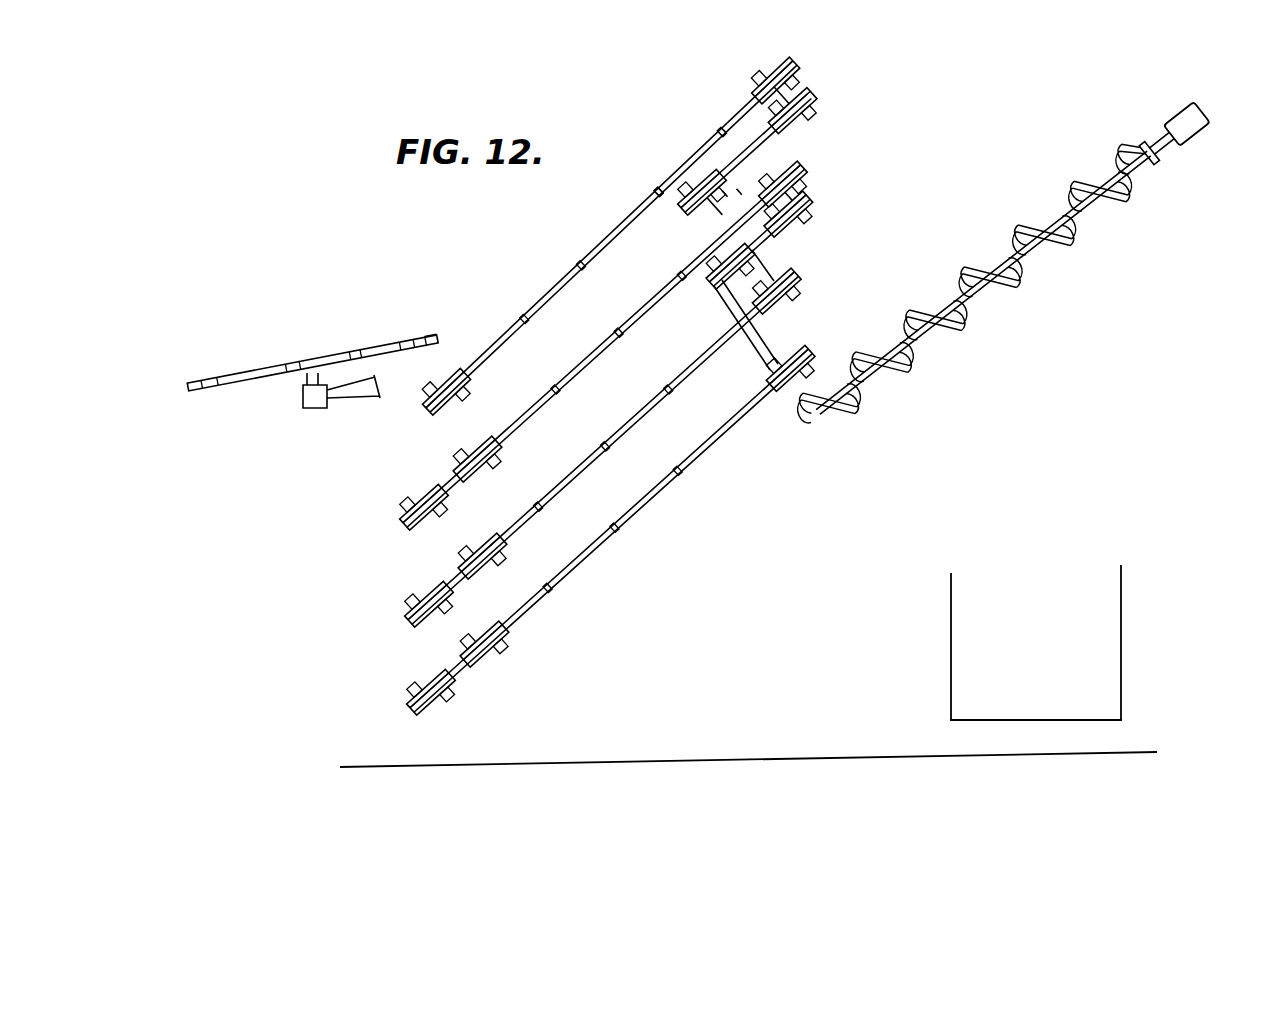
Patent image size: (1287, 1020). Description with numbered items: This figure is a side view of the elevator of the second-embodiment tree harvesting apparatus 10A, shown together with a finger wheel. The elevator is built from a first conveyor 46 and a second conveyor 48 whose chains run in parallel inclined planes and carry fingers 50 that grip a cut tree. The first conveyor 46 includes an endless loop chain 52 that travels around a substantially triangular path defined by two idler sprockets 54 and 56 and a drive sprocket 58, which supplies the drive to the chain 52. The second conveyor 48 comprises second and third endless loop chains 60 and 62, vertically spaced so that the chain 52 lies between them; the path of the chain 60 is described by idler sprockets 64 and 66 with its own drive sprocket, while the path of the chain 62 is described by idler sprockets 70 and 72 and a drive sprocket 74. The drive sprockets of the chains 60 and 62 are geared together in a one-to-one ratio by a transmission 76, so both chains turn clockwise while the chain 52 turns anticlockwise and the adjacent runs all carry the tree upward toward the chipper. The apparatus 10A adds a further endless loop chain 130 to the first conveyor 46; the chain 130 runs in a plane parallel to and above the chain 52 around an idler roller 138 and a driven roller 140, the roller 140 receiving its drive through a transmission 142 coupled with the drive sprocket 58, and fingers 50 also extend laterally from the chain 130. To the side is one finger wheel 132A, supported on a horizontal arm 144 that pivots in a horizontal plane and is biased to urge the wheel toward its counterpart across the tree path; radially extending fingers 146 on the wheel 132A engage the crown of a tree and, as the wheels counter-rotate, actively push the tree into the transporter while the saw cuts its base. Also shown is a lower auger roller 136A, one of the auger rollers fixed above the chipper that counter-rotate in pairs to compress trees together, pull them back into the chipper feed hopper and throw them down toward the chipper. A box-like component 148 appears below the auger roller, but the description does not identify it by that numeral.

The tree harvesting apparatus 10A is at (937, 172).
The first conveyor 46 is at (388, 688).
The second conveyor 48 is at (383, 538).
The fingers 50 is at (657, 192).
The endless loop chain 52 is at (574, 447).
The idler sprocket 54 is at (410, 620).
The idler sprocket 56 is at (524, 532).
The drive sprocket 58 is at (748, 275).
The second endless loop chain 60 is at (612, 355).
The third endless loop chain 62 is at (610, 529).
The idler sprocket 64 is at (402, 510).
The idler sprocket 66 is at (518, 448).
The idler sprocket 70 is at (520, 628).
The idler sprocket 72 is at (455, 680).
The drive sprocket 74 is at (774, 390).
The transmission 76 is at (775, 332).
The endless loop chain 130 is at (617, 252).
The finger wheel 132A is at (312, 375).
The lower auger roller 136A is at (965, 331).
The idler roller 138 is at (434, 405).
The driven roller 140 is at (790, 86).
The transmission 142 is at (778, 147).
The horizontal arm 144 is at (345, 388).
The radially extending fingers 146 is at (270, 380).
The container 148 is at (1052, 702).